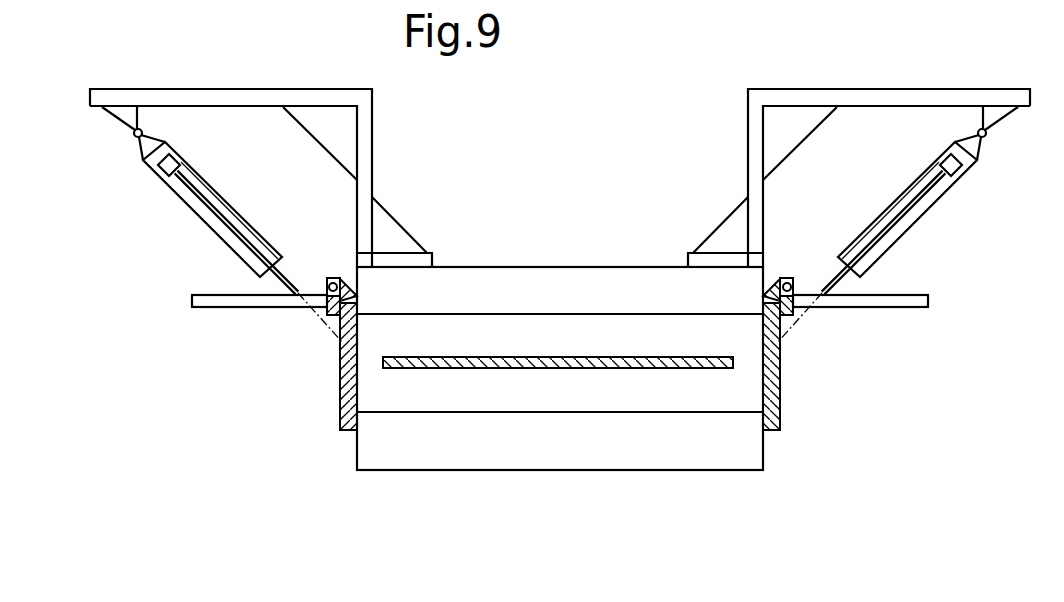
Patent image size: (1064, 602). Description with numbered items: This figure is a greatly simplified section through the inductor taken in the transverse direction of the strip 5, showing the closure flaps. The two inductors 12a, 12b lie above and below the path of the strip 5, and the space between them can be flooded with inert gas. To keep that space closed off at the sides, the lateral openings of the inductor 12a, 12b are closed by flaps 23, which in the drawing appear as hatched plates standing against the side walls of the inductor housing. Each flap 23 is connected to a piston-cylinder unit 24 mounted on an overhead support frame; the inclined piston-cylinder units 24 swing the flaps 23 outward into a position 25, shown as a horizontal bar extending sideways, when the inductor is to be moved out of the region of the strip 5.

The strip 5 is at (540, 362).
The inductor 12a is at (560, 336).
The inductor 12b is at (546, 282).
The flaps 23 is at (342, 382).
The piston-cylinder units 24 is at (197, 205).
The position 25 is at (220, 300).